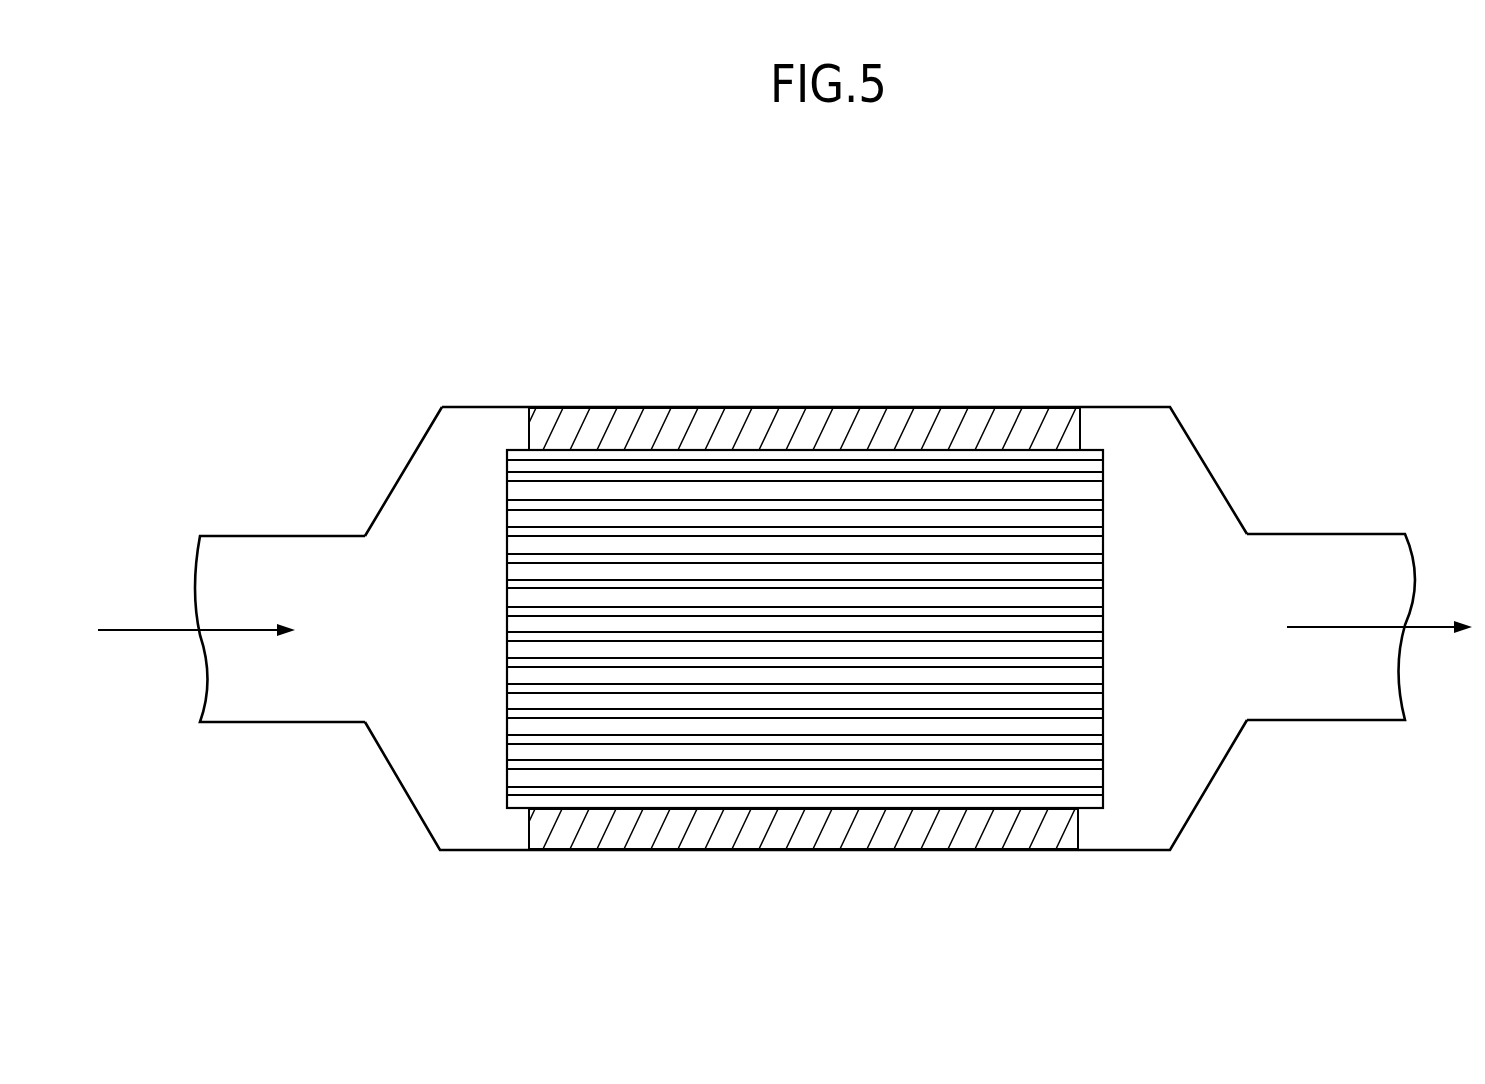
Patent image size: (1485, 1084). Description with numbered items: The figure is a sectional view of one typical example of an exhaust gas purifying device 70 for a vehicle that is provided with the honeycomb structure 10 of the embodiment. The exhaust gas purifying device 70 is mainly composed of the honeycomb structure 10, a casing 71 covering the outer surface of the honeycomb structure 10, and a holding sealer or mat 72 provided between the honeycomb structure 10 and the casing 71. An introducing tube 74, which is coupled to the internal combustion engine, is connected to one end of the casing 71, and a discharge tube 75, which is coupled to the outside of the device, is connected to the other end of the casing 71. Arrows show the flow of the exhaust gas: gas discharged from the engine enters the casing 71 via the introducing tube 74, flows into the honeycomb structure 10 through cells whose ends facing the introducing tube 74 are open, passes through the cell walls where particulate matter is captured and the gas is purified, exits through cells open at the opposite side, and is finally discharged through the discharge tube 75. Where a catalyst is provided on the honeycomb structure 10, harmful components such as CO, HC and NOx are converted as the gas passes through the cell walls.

The exhaust gas purifying device 70 is at (785, 593).
The casing 71 is at (1125, 850).
The holding sealer (mat) 72 is at (620, 408).
The introducing tube 74 is at (243, 536).
The discharge tube 75 is at (1323, 534).
The honeycomb structure 10 is at (1113, 507).